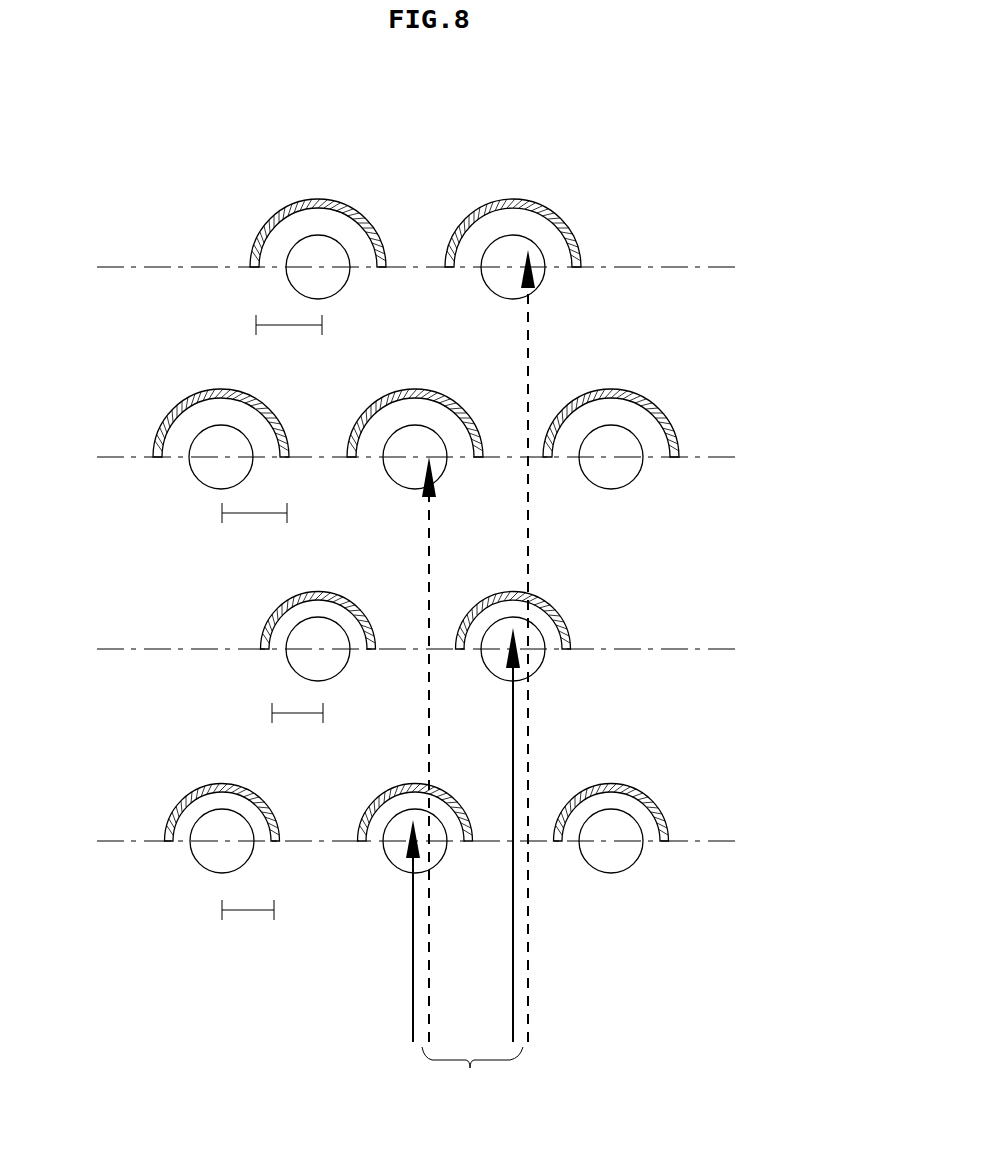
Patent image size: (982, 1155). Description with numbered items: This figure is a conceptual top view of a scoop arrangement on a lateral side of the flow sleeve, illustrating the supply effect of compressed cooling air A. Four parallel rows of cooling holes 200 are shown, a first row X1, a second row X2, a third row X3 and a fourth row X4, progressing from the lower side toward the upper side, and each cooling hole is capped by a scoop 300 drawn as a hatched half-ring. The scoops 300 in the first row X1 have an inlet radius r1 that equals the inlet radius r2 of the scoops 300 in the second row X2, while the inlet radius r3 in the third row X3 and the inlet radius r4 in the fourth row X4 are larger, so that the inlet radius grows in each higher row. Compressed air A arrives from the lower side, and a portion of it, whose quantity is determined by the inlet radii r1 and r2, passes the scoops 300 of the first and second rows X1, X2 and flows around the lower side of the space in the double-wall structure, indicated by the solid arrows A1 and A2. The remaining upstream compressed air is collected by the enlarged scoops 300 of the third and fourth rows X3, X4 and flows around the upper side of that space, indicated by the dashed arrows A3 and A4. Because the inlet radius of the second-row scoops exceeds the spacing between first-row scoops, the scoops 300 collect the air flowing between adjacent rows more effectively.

The cooling holes 200 is at (612, 458).
The scoops 300 is at (648, 402).
The first row X1 is at (402, 842).
The second row X2 is at (402, 650).
The third row X3 is at (402, 458).
The fourth row X4 is at (402, 268).
The inlet radius of first-row scoops r1 is at (248, 922).
The inlet radius of second-row scoops r2 is at (297, 723).
The inlet radius of third-row scoops r3 is at (254, 526).
The inlet radius of fourth-row scoops r4 is at (289, 337).
The compressed air flow of first row A1 is at (403, 931).
The compressed air flow of second row A2 is at (501, 835).
The compressed air flow of third row A3 is at (443, 749).
The compressed air flow of fourth row A4 is at (540, 646).
The compressed cooling air A is at (472, 1074).